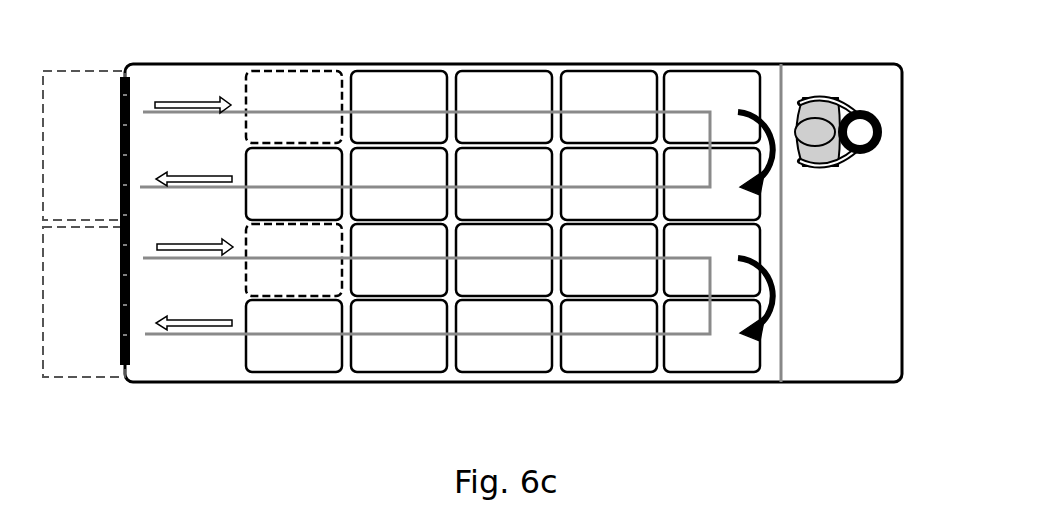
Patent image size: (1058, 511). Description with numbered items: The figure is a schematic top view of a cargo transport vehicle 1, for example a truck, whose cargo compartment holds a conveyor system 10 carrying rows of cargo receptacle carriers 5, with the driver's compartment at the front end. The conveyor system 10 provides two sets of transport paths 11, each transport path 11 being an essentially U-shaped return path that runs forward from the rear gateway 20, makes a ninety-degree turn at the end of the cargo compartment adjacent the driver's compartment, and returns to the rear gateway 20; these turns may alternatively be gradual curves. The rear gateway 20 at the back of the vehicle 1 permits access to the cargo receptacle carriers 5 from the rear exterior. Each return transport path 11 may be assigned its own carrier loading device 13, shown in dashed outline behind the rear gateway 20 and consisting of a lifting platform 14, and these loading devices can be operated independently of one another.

The cargo transport vehicle 1 is at (684, 44).
The cargo receptacle carrier 5 is at (505, 240).
The conveyor system 10 is at (222, 366).
The transport path 11 is at (647, 257).
The carrier loading device 13 is at (88, 66).
The lifting platform 14 is at (110, 190).
The rear gateway 20 is at (128, 175).